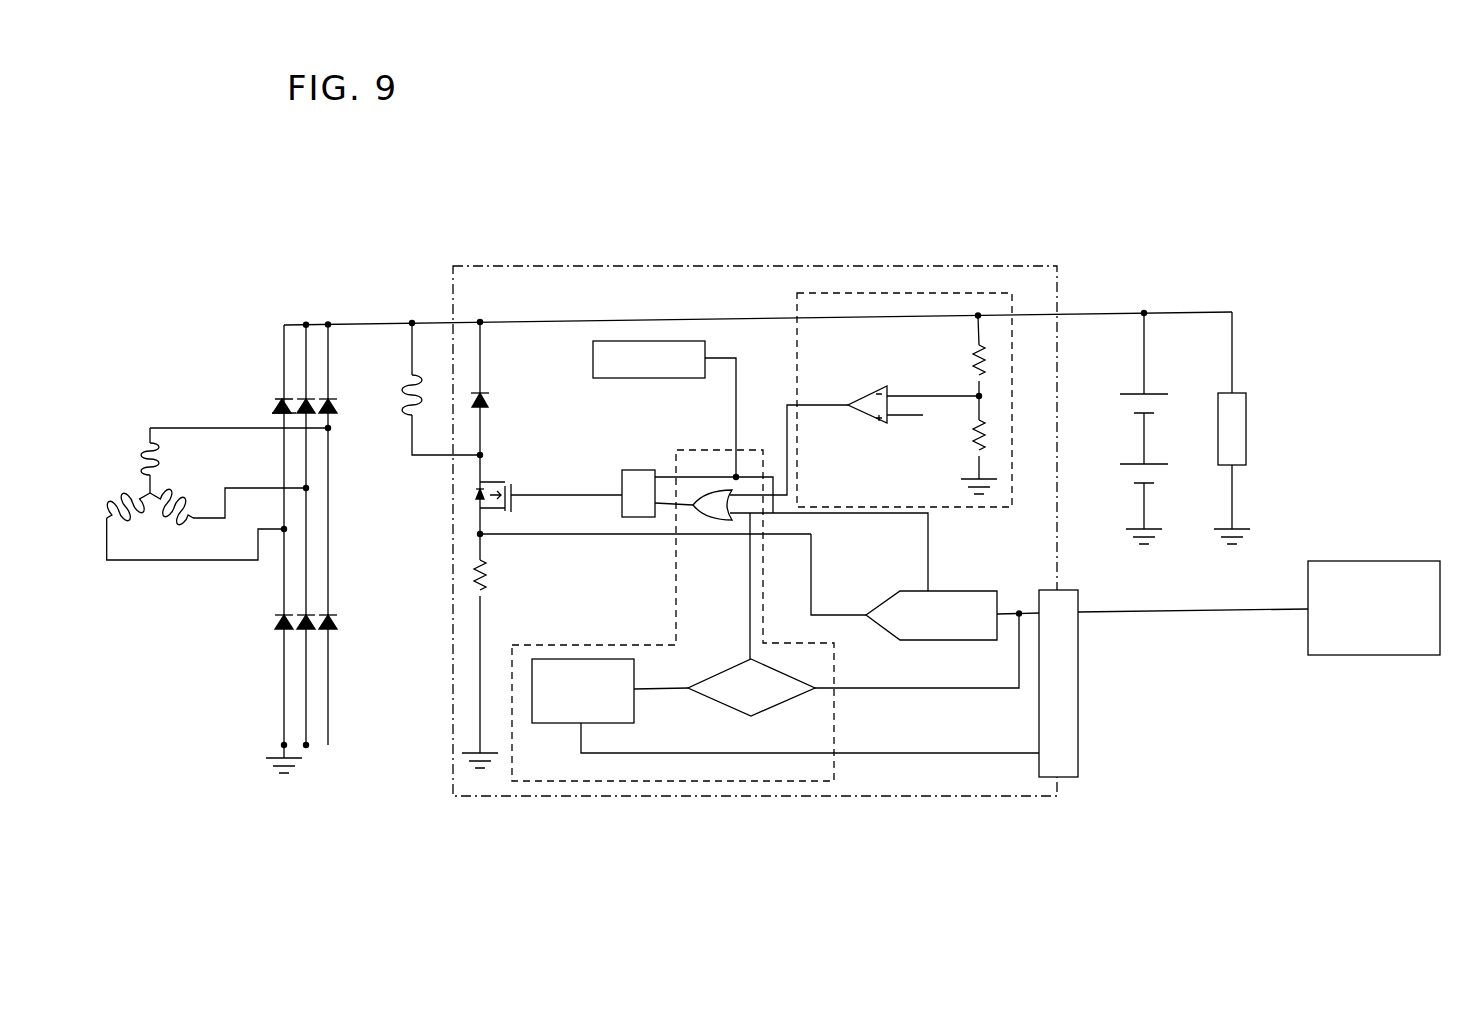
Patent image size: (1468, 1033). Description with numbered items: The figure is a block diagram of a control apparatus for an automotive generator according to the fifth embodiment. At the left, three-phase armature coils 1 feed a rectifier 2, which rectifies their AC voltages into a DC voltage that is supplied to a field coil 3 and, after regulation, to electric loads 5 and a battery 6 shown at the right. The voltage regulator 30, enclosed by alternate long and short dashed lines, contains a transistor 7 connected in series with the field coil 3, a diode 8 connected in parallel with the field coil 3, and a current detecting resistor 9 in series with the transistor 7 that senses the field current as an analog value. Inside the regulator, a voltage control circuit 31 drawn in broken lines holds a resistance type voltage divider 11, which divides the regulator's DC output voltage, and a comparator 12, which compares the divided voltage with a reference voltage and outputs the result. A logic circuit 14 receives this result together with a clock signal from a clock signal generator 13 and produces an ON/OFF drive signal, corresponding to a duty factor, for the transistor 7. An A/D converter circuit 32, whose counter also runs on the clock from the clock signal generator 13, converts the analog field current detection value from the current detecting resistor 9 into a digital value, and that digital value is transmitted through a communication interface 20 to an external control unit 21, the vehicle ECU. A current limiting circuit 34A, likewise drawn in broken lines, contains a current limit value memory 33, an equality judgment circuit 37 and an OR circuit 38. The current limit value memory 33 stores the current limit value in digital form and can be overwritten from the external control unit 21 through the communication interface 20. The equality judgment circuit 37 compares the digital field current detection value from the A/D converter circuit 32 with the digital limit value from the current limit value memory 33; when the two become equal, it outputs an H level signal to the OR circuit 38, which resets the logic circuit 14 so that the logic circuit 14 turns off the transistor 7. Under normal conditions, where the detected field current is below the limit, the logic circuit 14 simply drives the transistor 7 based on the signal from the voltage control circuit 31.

The armature coils 1 is at (140, 428).
The rectifier 2 is at (294, 548).
The field coil 3 is at (402, 404).
The electric loads 5 is at (1238, 390).
The battery 6 is at (1150, 390).
The transistor 7 is at (478, 495).
The diode 8 is at (487, 398).
The current detecting resistor 9 is at (478, 580).
The resistance type voltage divider 11 is at (972, 360).
The comparator 12 is at (858, 390).
The clock signal generator 13 is at (638, 378).
The logic circuit 14 is at (640, 470).
The communication interface 20 is at (1079, 708).
The external control unit 21 is at (1362, 561).
The voltage regulator 30 is at (663, 266).
The voltage control circuit 31 is at (910, 293).
The A/D converter circuit 32 is at (950, 591).
The current limit value memory 33 is at (552, 724).
The current limiting circuit 34A is at (836, 733).
The equality judgment circuit 37 is at (717, 703).
The OR circuit 38 is at (718, 522).